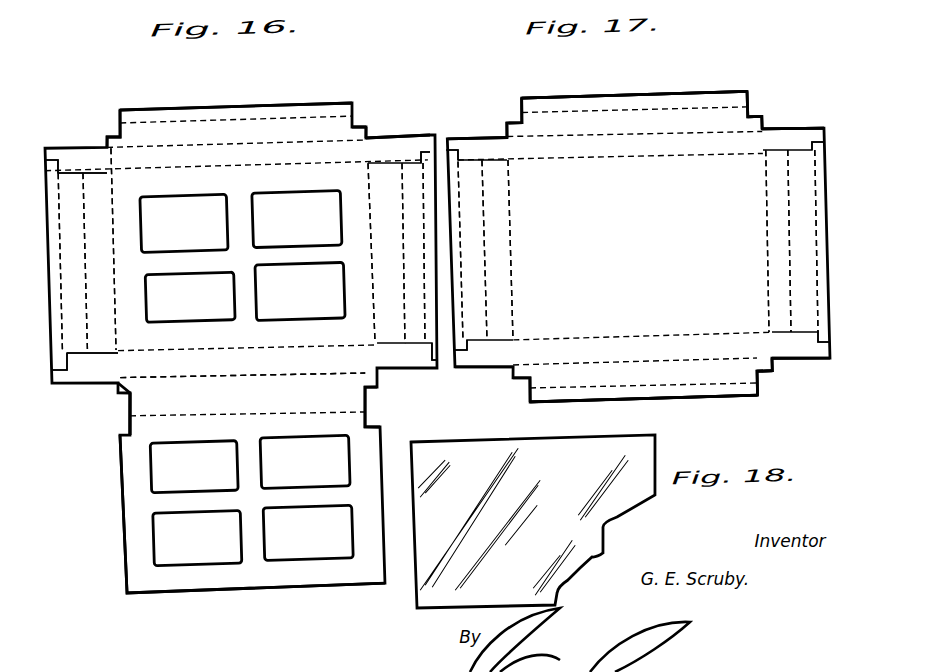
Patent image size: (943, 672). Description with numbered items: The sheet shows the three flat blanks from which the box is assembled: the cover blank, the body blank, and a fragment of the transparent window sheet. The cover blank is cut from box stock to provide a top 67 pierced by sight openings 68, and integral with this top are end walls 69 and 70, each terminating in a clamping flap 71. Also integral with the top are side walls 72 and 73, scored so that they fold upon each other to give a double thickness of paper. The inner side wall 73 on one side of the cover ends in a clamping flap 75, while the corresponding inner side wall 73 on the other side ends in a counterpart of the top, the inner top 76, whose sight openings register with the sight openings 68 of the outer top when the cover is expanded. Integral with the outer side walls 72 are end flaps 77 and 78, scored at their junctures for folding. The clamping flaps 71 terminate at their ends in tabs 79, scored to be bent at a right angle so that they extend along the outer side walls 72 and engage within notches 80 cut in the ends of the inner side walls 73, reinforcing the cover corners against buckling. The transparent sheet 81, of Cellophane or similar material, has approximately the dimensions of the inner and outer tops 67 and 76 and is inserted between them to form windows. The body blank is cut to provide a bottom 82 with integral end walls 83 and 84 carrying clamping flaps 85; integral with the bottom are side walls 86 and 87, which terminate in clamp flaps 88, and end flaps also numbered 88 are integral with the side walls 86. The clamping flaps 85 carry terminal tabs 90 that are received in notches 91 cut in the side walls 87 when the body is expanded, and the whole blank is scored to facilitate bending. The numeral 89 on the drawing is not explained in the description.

In FIG. 16, the top 67 is at (361, 228).
In FIG. 16, the sight openings 68 is at (314, 205).
In FIG. 16, the end wall 69 is at (380, 343).
In FIG. 16, the end wall 70 is at (63, 342).
In FIG. 16, the clamping flaps 71 is at (48, 350).
In FIG. 16, the side walls 72 is at (353, 161).
In FIG. 16, the side walls 73 is at (334, 135).
In FIG. 16, the clamping flap 75 is at (297, 114).
In FIG. 16, the inner top 76 is at (120, 496).
In FIG. 16, the end flap 77 is at (398, 155).
In FIG. 16, the end flap 78 is at (82, 152).
In FIG. 16, the tabs 79 is at (47, 168).
In FIG. 16, the notches 80 is at (111, 135).
In FIG. 18, the transparent sheet 81 is at (414, 595).
In FIG. 17, the bottom 82 is at (787, 132).
In FIG. 17, the end wall 83 is at (490, 280).
In FIG. 17, the end wall 84 is at (464, 264).
In FIG. 17, the clamping flaps 85 is at (448, 246).
In FIG. 17, the side wall 86 is at (743, 160).
In FIG. 17, the side wall 87 is at (716, 138).
In FIG. 17, the clamp flaps 88 is at (503, 140).
In FIG. 17, the main panel 89 is at (692, 121).
In FIG. 17, the terminal tabs 90 is at (485, 132).
In FIG. 17, the notches 91 is at (518, 133).